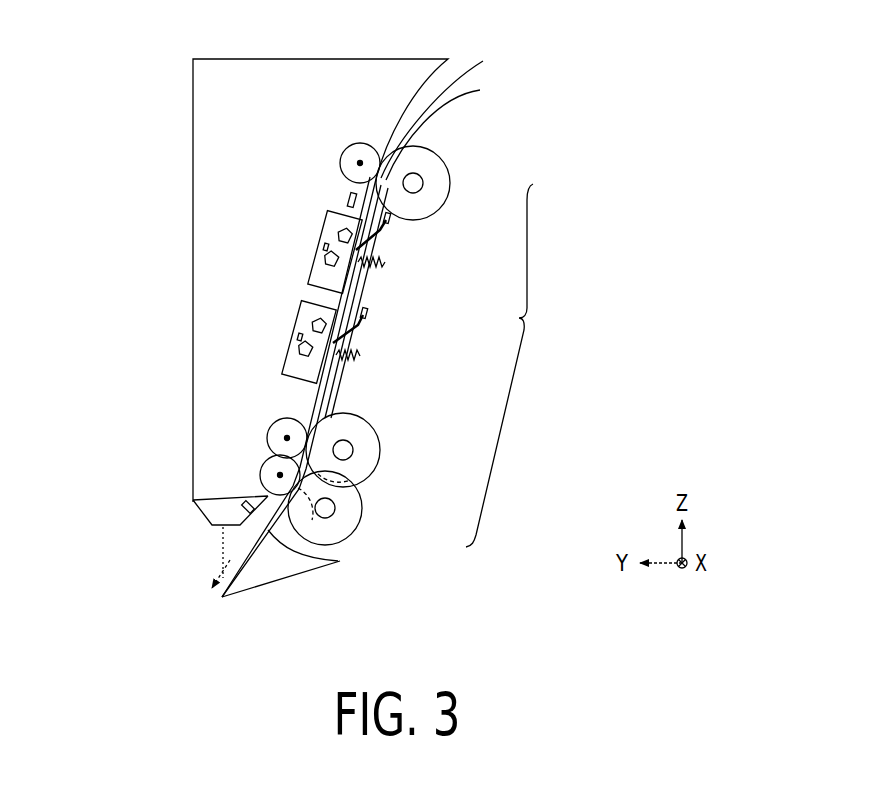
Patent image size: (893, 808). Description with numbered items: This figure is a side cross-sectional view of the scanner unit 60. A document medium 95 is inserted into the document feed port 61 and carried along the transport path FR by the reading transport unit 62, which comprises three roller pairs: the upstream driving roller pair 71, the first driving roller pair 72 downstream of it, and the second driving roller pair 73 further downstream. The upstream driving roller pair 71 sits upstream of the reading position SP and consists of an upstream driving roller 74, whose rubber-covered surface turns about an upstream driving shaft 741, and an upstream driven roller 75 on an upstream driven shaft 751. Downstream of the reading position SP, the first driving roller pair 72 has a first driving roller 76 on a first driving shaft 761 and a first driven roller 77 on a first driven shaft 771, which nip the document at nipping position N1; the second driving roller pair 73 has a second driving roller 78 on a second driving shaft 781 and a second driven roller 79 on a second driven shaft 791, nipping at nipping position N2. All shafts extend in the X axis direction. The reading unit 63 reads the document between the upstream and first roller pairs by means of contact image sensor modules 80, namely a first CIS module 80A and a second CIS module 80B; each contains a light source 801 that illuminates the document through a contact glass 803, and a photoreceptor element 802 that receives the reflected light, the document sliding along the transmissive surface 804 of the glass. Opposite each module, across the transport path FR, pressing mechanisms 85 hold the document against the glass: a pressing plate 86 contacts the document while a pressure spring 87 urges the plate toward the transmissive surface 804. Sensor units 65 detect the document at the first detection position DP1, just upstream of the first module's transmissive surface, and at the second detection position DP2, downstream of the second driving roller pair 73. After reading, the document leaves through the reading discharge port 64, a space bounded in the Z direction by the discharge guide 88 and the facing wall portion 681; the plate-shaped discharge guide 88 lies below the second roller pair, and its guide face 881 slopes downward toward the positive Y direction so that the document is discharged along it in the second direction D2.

The scanner unit 60 is at (158, 60).
The document feed port 61 is at (458, 60).
The reading transport unit 62 is at (517, 365).
The reading unit 63 is at (188, 222).
The reading discharge port 64 is at (230, 548).
The sensor units 65 is at (345, 200).
The wall portion 681 is at (215, 540).
The upstream driving roller pair 71 is at (466, 188).
The first driving roller pair 72 is at (390, 458).
The second driving roller pair 73 is at (373, 517).
The upstream driving roller 74 is at (436, 165).
The upstream driving shaft 741 is at (418, 183).
The upstream driven roller 75 is at (352, 148).
The upstream driven shaft 751 is at (360, 163).
The first driving roller 76 is at (380, 445).
The first driving shaft 761 is at (346, 453).
The first driven roller 77 is at (282, 421).
The first driven shaft 771 is at (287, 438).
The second driving roller 78 is at (355, 530).
The second driving shaft 781 is at (326, 512).
The second driven roller 79 is at (264, 467).
The second driven shaft 791 is at (280, 475).
The contact image sensor (CIS) modules 80 is at (185, 260).
The first CIS module 80A is at (312, 270).
The second CIS module 80B is at (300, 330).
The light source 801 is at (332, 262).
The photoreceptor element 802 is at (326, 240).
The contact glass 803 is at (370, 282).
The transmissive surface 804 is at (375, 300).
The pressing mechanisms 85 is at (438, 238).
The pressing plate 86 is at (383, 232).
The pressure spring 87 is at (385, 263).
The discharge guide 88 is at (260, 578).
The guide face 881 is at (212, 574).
The document medium 95 is at (478, 68).
The transport path FR is at (383, 130).
The reading position SP is at (335, 233).
The first detection position DP1 is at (405, 213).
The second detection position DP2 is at (290, 558).
The nipping position N1 is at (308, 462).
The nipping position N2 is at (305, 523).
The second direction D2 is at (203, 586).